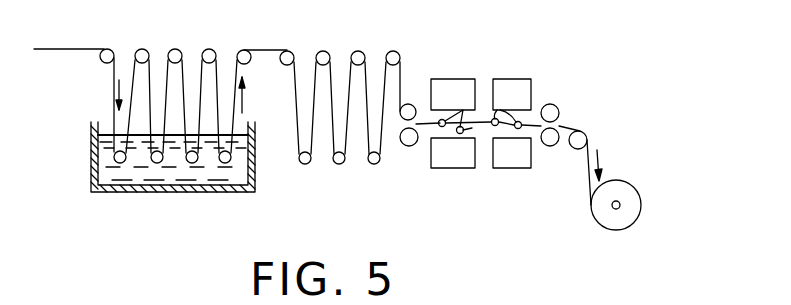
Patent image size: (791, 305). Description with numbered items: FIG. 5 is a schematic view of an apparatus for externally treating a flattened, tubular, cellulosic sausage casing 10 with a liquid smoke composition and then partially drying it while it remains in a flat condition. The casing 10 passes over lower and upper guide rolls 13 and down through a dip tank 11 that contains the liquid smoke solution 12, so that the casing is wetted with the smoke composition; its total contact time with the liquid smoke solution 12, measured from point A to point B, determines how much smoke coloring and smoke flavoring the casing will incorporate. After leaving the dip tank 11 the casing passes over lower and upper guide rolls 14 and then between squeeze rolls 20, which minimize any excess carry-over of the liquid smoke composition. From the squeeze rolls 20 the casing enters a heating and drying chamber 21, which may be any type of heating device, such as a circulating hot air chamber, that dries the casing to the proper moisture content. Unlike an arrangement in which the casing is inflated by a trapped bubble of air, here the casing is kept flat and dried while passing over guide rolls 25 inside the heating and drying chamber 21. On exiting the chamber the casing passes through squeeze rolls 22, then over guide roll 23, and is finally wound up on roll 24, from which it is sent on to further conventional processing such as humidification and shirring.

The sausage casing 10 is at (112, 86).
The dip tank 11 is at (125, 193).
The liquid smoke solution 12 is at (210, 183).
The lower and upper guide rolls 13 is at (103, 62).
The lower and upper guide rolls 14 is at (289, 52).
The squeeze rolls 20 is at (410, 146).
The heating and drying chamber 21 is at (501, 78).
The squeeze rolls 22 is at (553, 104).
The guide roll 23 is at (588, 131).
The roll 24 is at (632, 188).
The guide rolls 25 is at (483, 109).
The point A is at (112, 133).
The point B is at (405, 108).